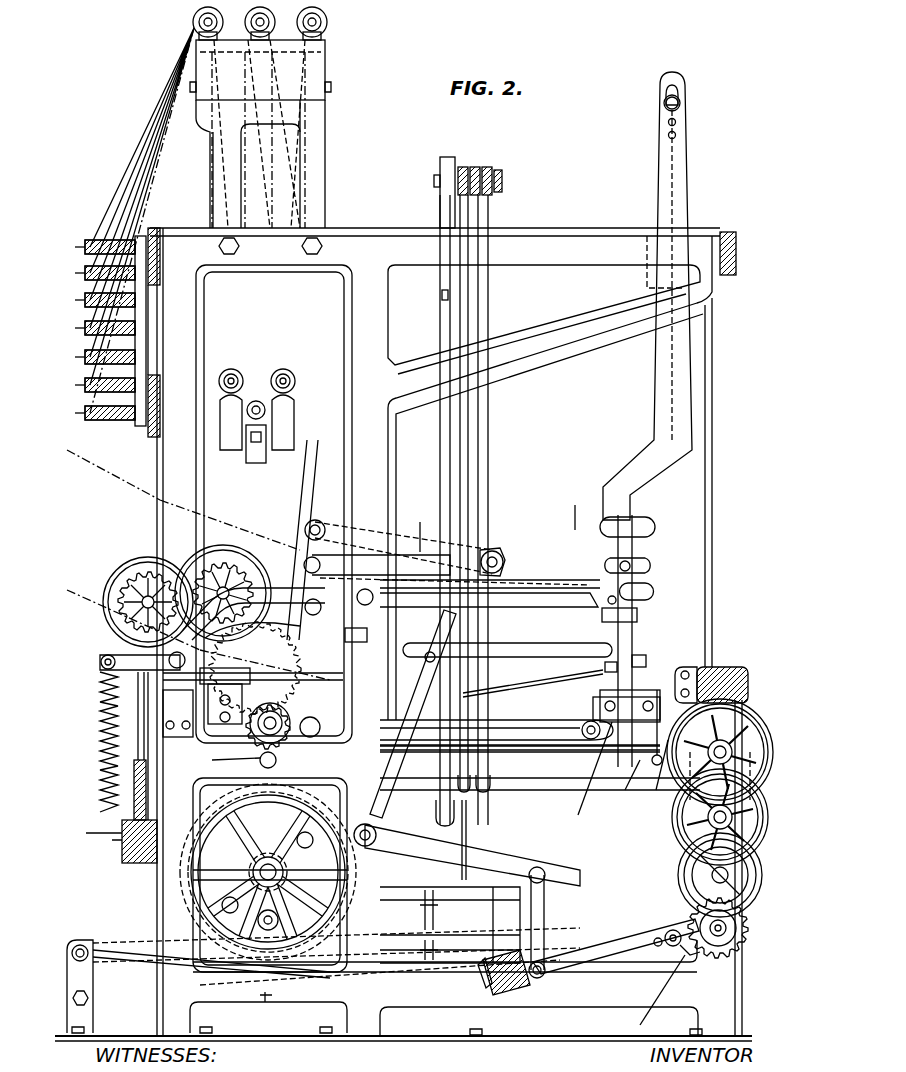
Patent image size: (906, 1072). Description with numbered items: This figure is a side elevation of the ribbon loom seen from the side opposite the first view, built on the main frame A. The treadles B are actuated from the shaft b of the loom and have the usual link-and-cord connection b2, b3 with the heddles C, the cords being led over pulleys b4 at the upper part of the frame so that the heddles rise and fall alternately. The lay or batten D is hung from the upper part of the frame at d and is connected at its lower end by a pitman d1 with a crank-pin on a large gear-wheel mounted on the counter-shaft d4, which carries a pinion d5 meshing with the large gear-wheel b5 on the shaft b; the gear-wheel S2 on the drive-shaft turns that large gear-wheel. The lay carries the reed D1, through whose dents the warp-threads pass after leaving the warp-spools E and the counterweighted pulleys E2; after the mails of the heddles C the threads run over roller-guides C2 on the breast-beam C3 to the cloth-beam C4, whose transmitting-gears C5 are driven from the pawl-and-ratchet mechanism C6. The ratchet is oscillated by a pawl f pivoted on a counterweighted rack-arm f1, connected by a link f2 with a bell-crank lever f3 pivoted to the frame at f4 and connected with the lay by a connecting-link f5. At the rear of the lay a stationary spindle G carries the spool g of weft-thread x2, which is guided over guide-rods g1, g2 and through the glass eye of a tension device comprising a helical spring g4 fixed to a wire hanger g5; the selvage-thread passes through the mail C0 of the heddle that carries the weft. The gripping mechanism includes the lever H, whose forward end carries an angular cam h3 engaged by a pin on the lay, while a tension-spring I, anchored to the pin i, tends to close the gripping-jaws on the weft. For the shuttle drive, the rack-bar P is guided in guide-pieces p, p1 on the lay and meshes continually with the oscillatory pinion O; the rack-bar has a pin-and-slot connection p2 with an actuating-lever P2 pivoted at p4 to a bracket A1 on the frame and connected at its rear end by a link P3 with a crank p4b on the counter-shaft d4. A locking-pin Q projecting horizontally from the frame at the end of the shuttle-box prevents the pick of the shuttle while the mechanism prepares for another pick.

The main frame A is at (403, 623).
The bracket A1 is at (414, 525).
The lay or batten D is at (682, 440).
The lay suspension point d is at (664, 105).
The pulleys b4 is at (500, 178).
The link-and-cord connection b2 is at (444, 450).
The link-and-cord connection b3 is at (483, 430).
The counterweighted pulleys E2 is at (231, 369).
The lever H is at (256, 585).
The link P3 is at (312, 541).
The gear-wheel S2 is at (150, 560).
The wire hanger g5 is at (250, 645).
The helical spring g4 is at (268, 712).
The pinion d5 is at (228, 700).
The counter-shaft d4 is at (196, 750).
The crank p4b is at (240, 761).
The guide-rod g1 is at (112, 690).
The spool g is at (100, 805).
The weft thread x2 is at (136, 726).
The stationary spindle G is at (134, 756).
The tension-spring I is at (100, 778).
The anchoring-pin i is at (100, 850).
The shaft b is at (252, 872).
The large gear-wheel b5 is at (232, 968).
The pivot p4 is at (492, 550).
The actuating-lever P2 is at (538, 560).
The angular cam h3 is at (582, 507).
The rack-bar P is at (650, 622).
The pin-and-slot connection p2 is at (640, 566).
The guide-piece p is at (635, 600).
The connecting-link f5 is at (563, 643).
The guide-rod g2 is at (432, 652).
The eye or mail C0 is at (550, 672).
The heddles C is at (540, 710).
The reed D1 is at (600, 703).
The connecting-rod or pitman d1 is at (533, 747).
The warp-spools E is at (363, 618).
The roller-guides C2 is at (700, 660).
The breast-beam C3 is at (740, 668).
The cloth-beam C4 is at (730, 755).
The transmitting-gears C5 is at (750, 800).
The pawl-and-ratchet mechanism C6 is at (695, 918).
The pivot f4 is at (376, 834).
The bell-crank lever f3 is at (490, 862).
The link f2 is at (547, 935).
The counterweighted rack-arm f1 is at (585, 962).
The pawl f is at (662, 995).
The treadles B is at (425, 925).
The guide-piece p1 is at (589, 768).
The oscillatory pinion O is at (639, 753).
The locking-pin Q is at (656, 778).